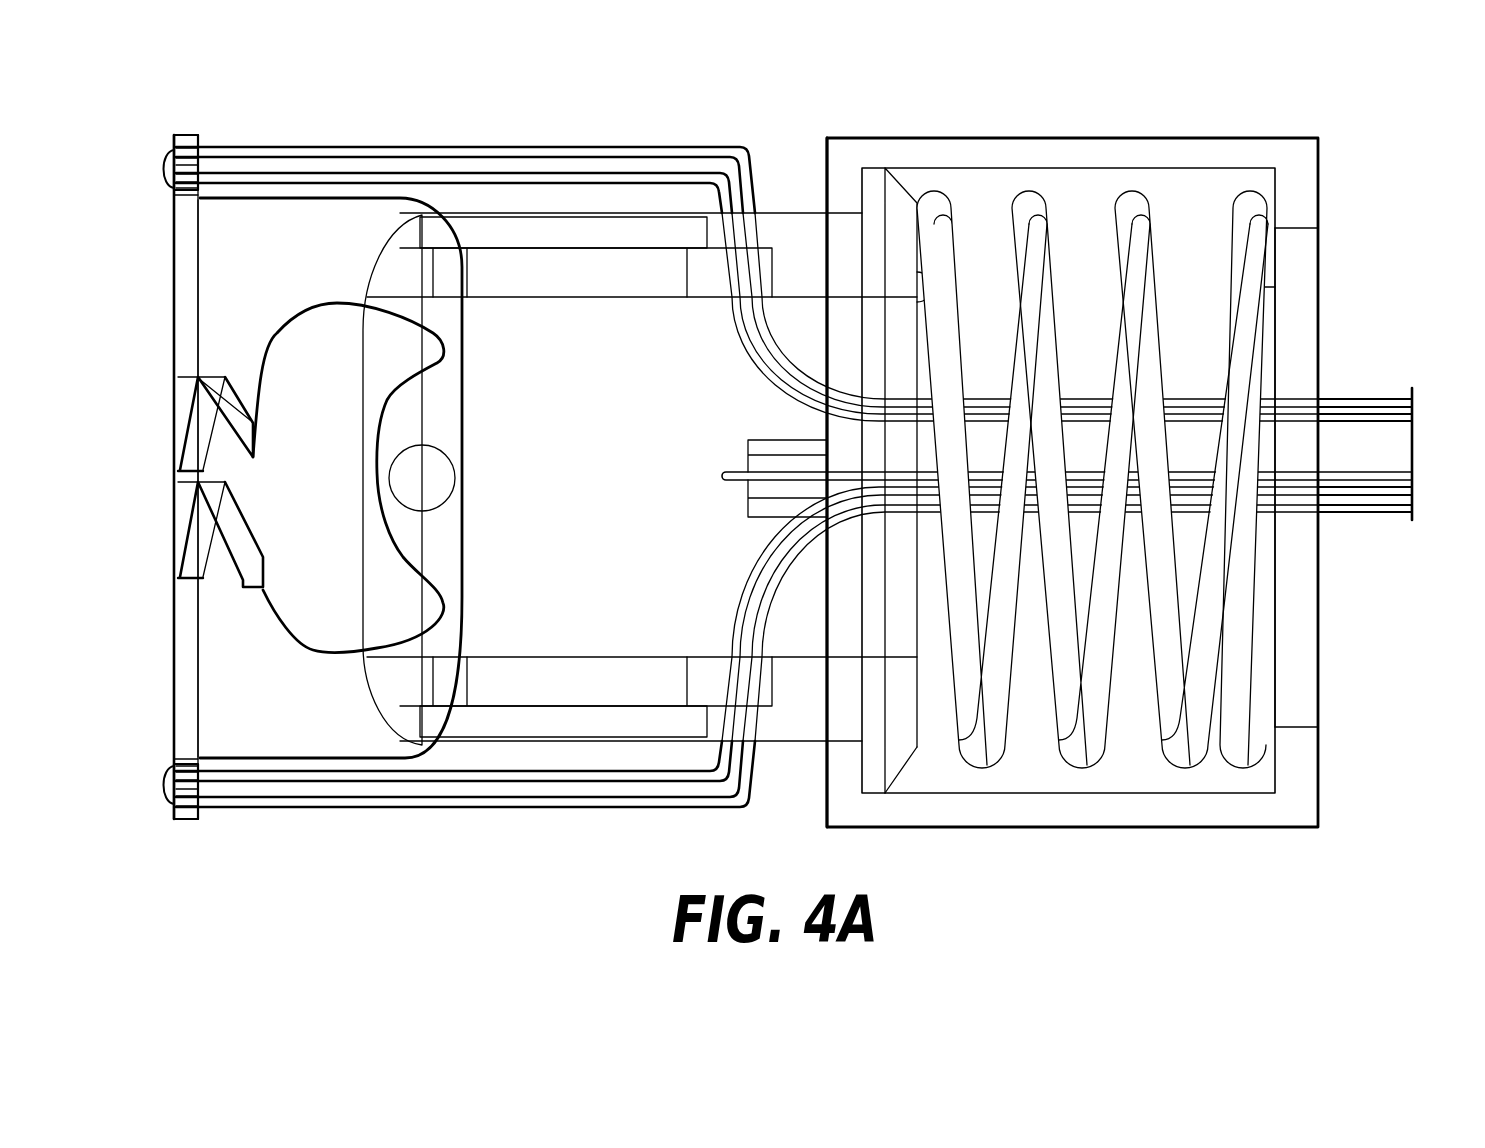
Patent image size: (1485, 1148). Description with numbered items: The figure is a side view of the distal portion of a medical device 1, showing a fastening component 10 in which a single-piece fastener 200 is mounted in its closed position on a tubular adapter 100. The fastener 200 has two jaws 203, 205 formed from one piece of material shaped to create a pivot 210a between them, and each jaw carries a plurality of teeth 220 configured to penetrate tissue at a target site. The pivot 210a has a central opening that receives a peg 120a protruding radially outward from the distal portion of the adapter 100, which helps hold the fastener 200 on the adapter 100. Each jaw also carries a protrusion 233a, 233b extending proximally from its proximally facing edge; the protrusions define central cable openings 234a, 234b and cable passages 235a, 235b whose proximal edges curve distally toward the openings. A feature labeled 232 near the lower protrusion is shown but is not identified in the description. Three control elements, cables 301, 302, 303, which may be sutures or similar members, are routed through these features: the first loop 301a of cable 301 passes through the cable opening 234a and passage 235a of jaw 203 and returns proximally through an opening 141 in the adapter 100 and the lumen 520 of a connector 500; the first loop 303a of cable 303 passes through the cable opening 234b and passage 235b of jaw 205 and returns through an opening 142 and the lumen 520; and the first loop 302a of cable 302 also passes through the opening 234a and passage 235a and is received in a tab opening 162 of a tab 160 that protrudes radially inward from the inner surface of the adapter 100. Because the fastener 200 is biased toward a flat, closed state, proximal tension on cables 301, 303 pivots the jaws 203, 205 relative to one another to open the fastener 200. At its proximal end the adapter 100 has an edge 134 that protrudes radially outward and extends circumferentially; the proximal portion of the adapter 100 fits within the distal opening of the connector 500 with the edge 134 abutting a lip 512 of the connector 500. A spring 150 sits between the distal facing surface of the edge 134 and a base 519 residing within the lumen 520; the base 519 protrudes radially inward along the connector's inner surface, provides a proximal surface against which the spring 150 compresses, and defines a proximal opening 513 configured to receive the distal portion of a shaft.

The cable passage 235a is at (176, 150).
The protrusion 233a is at (205, 120).
The cable opening 234a is at (178, 192).
The jaw 203 is at (235, 288).
The teeth 220 is at (198, 523).
The pivot 210a is at (372, 512).
The peg 120a is at (450, 496).
The fastener 200 is at (152, 625).
The cable opening 234b is at (178, 767).
The protrusion 233b is at (160, 826).
The flange 232 is at (198, 808).
The cable passage 235b is at (200, 810).
The jaw 205 is at (267, 708).
The first loop 303a is at (443, 820).
The adapter 100 is at (600, 750).
The first loop 301a is at (616, 125).
The lip 512 is at (838, 188).
The edge 134 is at (865, 172).
The opening 141 is at (762, 227).
The opening 142 is at (762, 728).
The tab 160 is at (748, 447).
The tab opening 162 is at (748, 488).
The first loop 302a is at (790, 500).
The connector 500 is at (1086, 132).
The spring 150 is at (1133, 195).
The base 519 is at (1308, 214).
The cable 301 is at (1378, 392).
The cable 302 is at (1094, 440).
The cable 303 is at (1405, 520).
The proximal opening 513 is at (1306, 611).
The lumen 520 is at (1212, 780).
The medical device 1 is at (1334, 860).
The fastening component 10 is at (1136, 850).